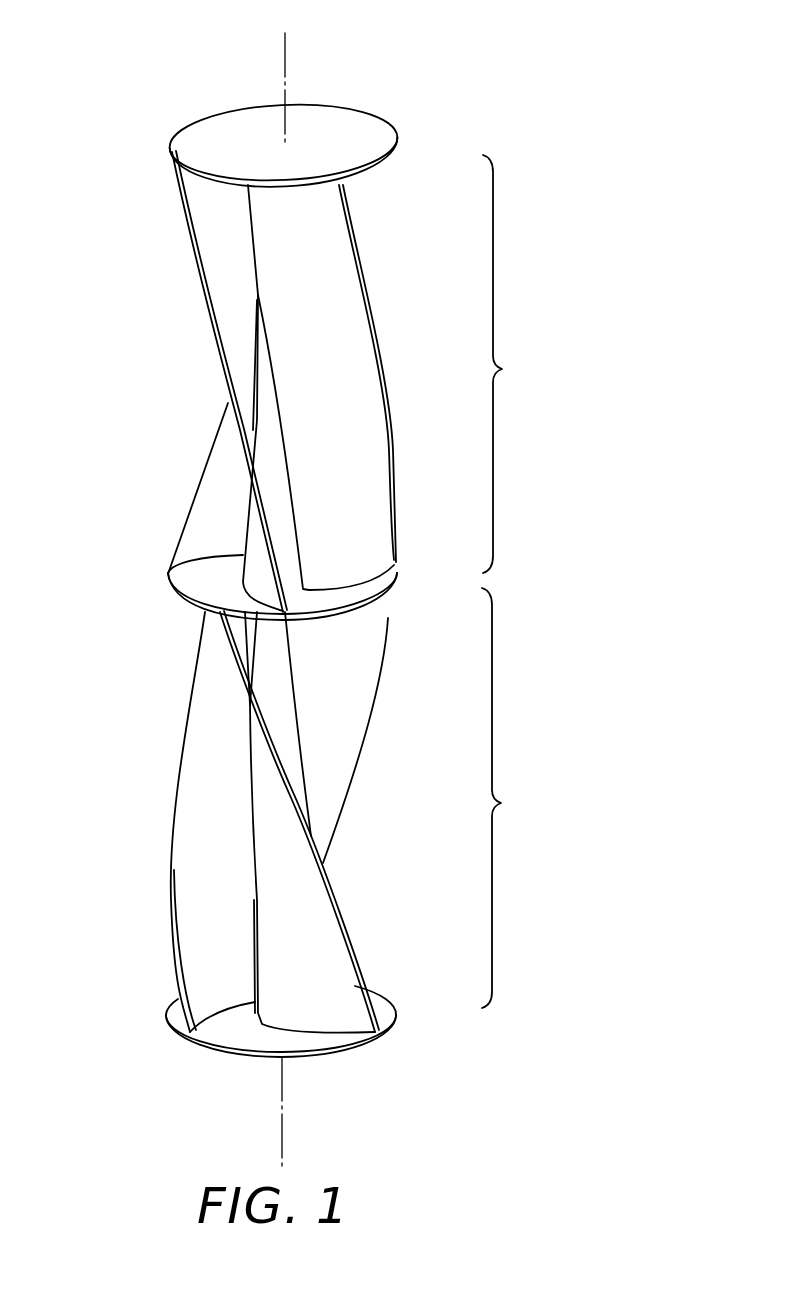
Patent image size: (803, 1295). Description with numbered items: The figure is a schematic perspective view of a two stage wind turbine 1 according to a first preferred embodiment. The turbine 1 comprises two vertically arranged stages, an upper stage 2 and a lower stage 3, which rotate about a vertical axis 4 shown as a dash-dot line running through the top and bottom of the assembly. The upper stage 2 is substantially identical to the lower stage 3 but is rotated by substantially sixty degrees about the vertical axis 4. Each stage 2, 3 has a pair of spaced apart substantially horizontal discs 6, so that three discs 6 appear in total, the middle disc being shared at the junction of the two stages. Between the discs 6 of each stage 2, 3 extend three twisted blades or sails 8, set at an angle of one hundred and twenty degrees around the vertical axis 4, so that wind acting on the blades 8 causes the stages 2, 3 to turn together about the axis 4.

The turbine 1 is at (550, 118).
The upper stage 2 is at (507, 364).
The lower stage 3 is at (507, 798).
The vertical axis 4 is at (282, 1123).
The horizontal discs 6 is at (208, 128).
The blades or sails 8 is at (203, 242).